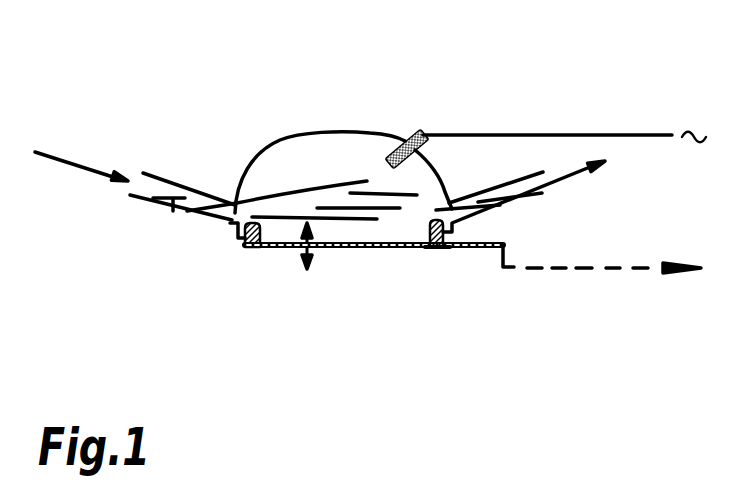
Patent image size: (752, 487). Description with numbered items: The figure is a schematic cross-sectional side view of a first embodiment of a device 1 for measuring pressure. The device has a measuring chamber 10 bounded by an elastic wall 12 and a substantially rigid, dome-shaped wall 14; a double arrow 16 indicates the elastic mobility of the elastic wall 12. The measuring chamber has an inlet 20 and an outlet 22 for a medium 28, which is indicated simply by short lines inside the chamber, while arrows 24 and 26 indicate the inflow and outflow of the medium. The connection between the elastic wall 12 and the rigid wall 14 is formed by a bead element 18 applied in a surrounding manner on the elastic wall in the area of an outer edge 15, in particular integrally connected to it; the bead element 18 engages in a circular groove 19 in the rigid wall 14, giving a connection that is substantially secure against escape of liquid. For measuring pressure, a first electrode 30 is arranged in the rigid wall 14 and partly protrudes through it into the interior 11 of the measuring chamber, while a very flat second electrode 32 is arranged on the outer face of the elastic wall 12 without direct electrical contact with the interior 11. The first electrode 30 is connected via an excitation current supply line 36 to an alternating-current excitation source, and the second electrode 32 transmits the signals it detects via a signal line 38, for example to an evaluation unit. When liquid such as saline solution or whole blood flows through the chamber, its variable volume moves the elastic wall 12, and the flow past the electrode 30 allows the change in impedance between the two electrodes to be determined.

The device 1 is at (54, 45).
The measuring chamber 10 is at (297, 150).
The interior of the measuring chamber 11 is at (288, 217).
The elastic wall 12 is at (413, 250).
The substantially rigid wall 14 is at (205, 212).
The outer edge 15 is at (250, 250).
The double arrow 16 is at (315, 268).
The bead element 18 is at (255, 251).
The circular groove 19 is at (438, 250).
The inlet 20 is at (173, 210).
The outlet 22 is at (510, 187).
The inflow arrow 24 is at (65, 163).
The outflow arrow 26 is at (576, 162).
The medium 28 is at (360, 157).
The first electrode 30 is at (418, 136).
The second electrode 32 is at (392, 250).
The excitation current supply line 36 is at (638, 135).
The signal line 38 is at (616, 272).